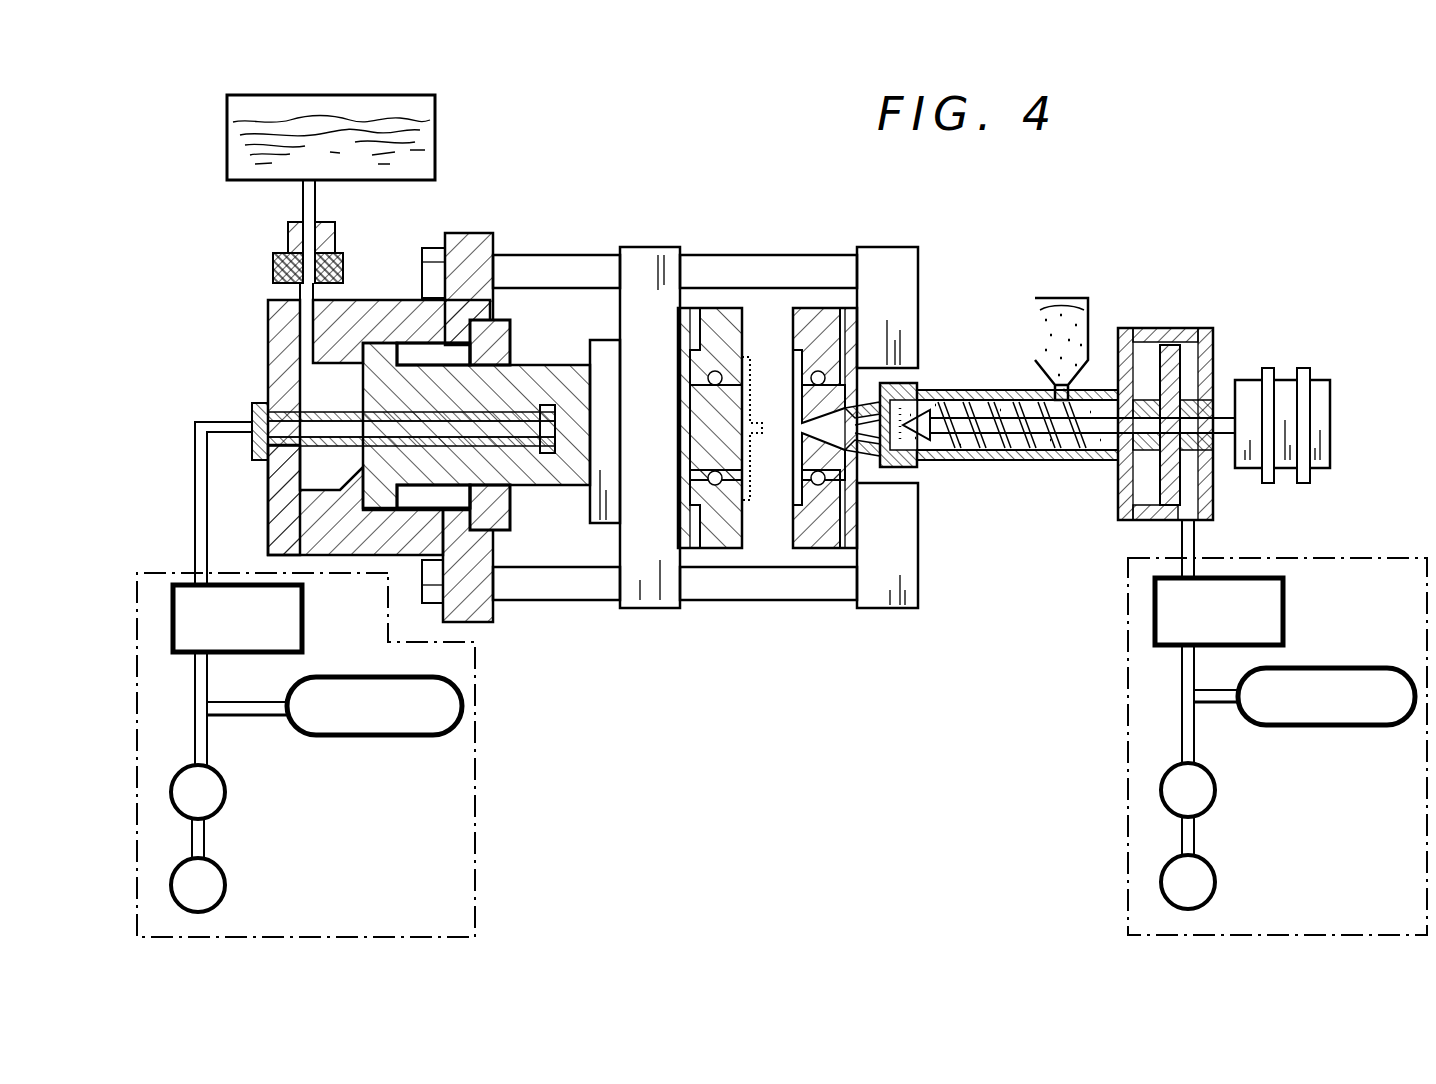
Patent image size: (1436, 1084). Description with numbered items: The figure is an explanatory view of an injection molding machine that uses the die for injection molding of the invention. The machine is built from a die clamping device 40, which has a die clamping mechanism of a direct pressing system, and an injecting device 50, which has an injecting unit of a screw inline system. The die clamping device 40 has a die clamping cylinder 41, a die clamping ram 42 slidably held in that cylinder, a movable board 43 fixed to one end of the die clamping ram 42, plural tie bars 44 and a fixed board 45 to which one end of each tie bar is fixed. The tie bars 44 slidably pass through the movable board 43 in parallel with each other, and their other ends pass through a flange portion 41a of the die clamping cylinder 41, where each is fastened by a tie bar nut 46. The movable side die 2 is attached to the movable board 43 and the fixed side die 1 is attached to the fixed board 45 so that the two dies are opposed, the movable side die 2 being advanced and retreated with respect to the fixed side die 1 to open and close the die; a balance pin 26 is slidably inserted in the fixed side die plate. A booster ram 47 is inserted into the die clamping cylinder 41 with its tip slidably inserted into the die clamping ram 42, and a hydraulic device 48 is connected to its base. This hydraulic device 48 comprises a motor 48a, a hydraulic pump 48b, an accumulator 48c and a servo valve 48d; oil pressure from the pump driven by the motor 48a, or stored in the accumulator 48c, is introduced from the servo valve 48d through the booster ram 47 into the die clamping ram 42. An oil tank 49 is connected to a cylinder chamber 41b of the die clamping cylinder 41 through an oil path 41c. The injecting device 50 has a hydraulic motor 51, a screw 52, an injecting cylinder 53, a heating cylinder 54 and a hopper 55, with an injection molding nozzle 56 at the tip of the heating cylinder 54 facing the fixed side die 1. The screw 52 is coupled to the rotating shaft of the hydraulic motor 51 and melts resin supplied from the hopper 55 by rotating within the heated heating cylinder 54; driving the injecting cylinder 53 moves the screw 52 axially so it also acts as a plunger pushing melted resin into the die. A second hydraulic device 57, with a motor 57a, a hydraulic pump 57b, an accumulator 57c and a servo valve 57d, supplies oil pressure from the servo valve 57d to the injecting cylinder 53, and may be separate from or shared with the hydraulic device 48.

The fixed side die 1 is at (812, 308).
The movable side die 2 is at (706, 308).
The balance pin 26 is at (793, 548).
The die clamping device 40 is at (610, 190).
The die clamping cylinder 41 is at (268, 300).
The flange portion 41a is at (480, 622).
The cylinder chamber 41b is at (330, 470).
The oil path 41c is at (288, 238).
The die clamping ram 42 is at (538, 365).
The movable board 43 is at (645, 247).
The tie bars 44 is at (508, 255).
The fixed board 45 is at (893, 247).
The tie bar nut 46 is at (428, 603).
The booster ram 47 is at (330, 405).
The hydraulic device 48 is at (350, 679).
The motor 48a is at (226, 888).
The hydraulic pump 48b is at (225, 800).
The accumulator 48c is at (357, 735).
The servo valve 48d is at (260, 652).
The oil tank 49 is at (437, 104).
The injecting device 50 is at (1107, 288).
The hydraulic motor 51 is at (1320, 422).
The screw 52 is at (988, 460).
The injecting cylinder 53 is at (1192, 328).
The heating cylinder 54 is at (985, 390).
The hopper 55 is at (1045, 298).
The injection molding nozzle 56 is at (878, 470).
The hydraulic device 57 is at (1231, 727).
The motor 57a is at (1216, 884).
The hydraulic pump 57b is at (1214, 775).
The accumulator 57c is at (1328, 725).
The servo valve 57d is at (1200, 645).